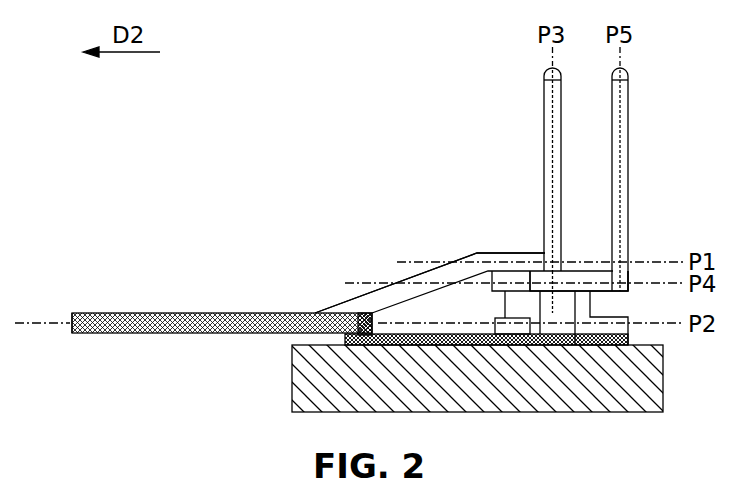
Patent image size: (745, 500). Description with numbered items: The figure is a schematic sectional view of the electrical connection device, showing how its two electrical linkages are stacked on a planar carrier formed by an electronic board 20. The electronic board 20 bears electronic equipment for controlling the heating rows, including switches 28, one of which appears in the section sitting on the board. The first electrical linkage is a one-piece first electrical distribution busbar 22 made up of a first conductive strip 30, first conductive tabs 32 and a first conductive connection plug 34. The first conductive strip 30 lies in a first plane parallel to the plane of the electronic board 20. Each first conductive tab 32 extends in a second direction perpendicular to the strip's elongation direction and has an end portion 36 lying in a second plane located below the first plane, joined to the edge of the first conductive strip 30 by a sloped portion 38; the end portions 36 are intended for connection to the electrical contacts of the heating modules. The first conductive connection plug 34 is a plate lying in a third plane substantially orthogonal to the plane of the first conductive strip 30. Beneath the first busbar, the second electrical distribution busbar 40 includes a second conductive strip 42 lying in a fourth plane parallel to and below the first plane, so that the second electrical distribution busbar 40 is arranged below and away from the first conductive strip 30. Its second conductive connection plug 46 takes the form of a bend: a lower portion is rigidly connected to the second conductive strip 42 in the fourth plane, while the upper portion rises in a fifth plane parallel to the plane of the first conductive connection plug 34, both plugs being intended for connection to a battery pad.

The electronic board 20 is at (663, 385).
The first electrical distribution busbar 22 is at (484, 252).
The switch 28 is at (515, 335).
The first conductive strip 30 is at (430, 283).
The first conductive tab 32 is at (218, 334).
The first conductive connection plug 34 is at (543, 100).
The end portion 36 is at (108, 334).
The sloped portion 38 is at (350, 300).
The second electrical distribution busbar 40 is at (584, 268).
The second conductive strip 42 is at (579, 281).
The second conductive connection plug 46 is at (630, 103).